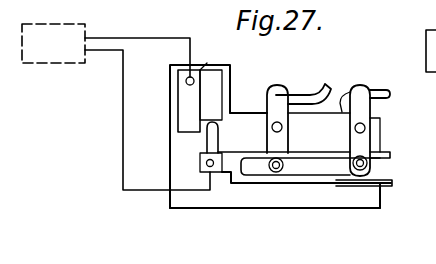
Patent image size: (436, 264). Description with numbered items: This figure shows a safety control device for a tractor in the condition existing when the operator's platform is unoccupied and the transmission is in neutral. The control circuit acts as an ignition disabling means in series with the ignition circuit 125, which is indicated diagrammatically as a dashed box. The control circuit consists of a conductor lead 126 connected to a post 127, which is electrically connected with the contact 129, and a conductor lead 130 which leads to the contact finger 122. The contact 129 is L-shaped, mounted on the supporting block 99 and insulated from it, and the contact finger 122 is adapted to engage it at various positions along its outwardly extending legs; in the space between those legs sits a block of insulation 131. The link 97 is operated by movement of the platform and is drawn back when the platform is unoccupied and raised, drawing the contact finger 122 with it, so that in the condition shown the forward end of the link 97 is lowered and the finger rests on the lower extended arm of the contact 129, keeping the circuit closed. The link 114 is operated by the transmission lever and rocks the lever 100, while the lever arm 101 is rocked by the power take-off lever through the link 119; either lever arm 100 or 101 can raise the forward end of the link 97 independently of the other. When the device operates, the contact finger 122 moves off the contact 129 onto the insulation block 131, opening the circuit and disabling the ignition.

The link 97 is at (389, 187).
The supporting block 99 is at (294, 206).
The lever 100 is at (282, 102).
The lever arm 101 is at (342, 100).
The link 114 is at (312, 90).
The link 119 is at (385, 92).
The contact finger 122 is at (213, 138).
The ignition circuit 125 is at (49, 77).
The conductor lead 126 is at (147, 37).
The post 127 is at (193, 78).
The contact 129 is at (194, 100).
The conductor lead 130 is at (123, 157).
The block of insulation 131 is at (214, 82).